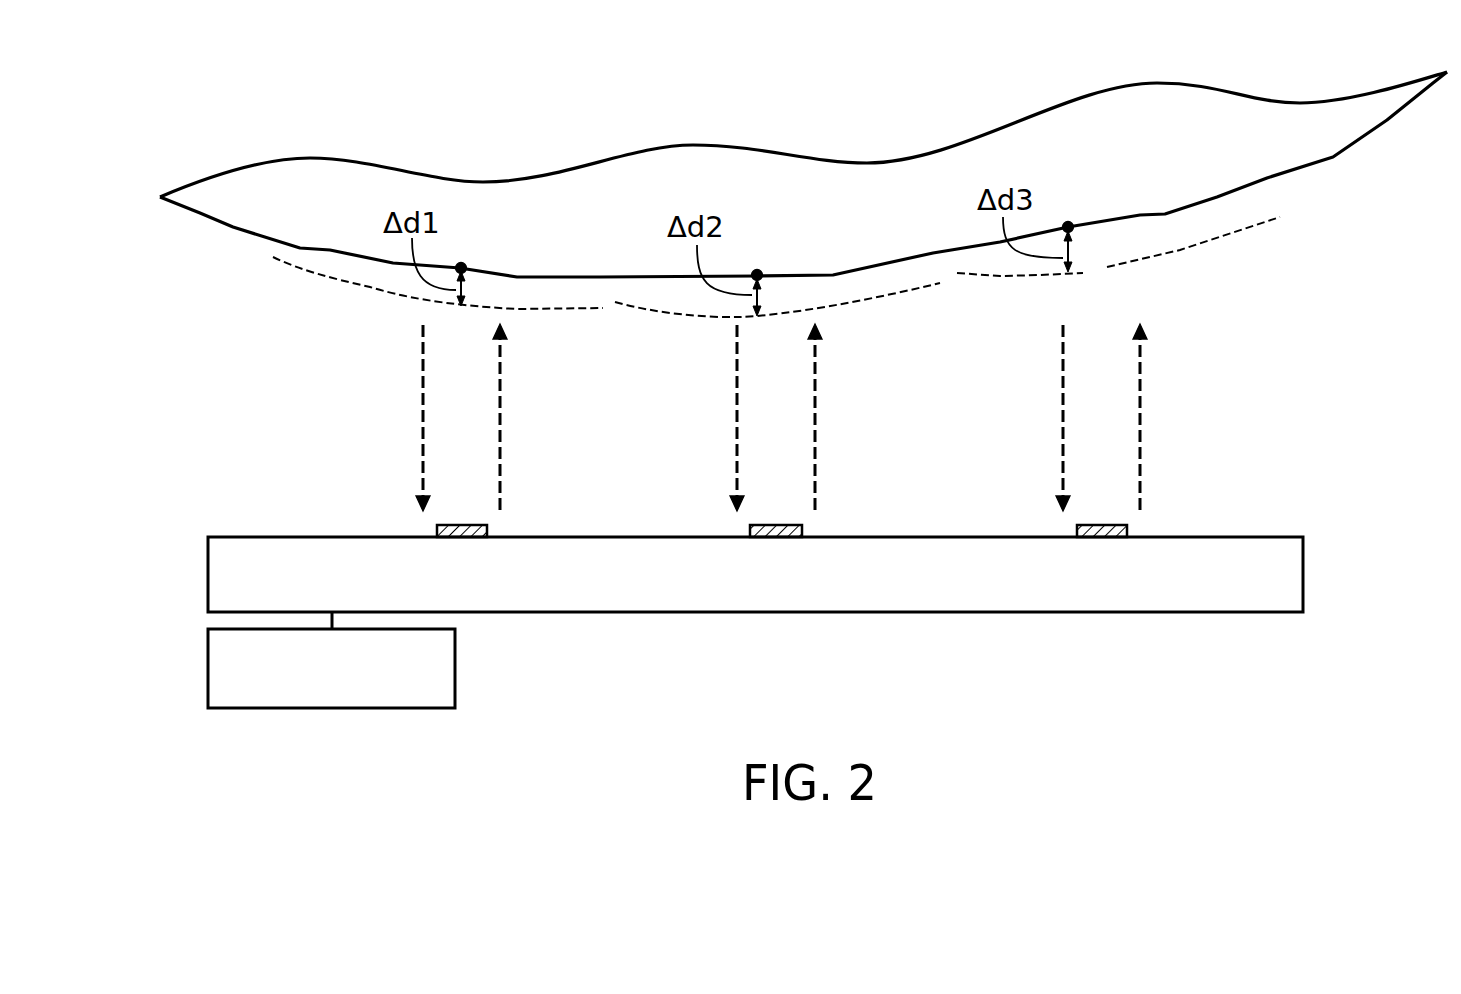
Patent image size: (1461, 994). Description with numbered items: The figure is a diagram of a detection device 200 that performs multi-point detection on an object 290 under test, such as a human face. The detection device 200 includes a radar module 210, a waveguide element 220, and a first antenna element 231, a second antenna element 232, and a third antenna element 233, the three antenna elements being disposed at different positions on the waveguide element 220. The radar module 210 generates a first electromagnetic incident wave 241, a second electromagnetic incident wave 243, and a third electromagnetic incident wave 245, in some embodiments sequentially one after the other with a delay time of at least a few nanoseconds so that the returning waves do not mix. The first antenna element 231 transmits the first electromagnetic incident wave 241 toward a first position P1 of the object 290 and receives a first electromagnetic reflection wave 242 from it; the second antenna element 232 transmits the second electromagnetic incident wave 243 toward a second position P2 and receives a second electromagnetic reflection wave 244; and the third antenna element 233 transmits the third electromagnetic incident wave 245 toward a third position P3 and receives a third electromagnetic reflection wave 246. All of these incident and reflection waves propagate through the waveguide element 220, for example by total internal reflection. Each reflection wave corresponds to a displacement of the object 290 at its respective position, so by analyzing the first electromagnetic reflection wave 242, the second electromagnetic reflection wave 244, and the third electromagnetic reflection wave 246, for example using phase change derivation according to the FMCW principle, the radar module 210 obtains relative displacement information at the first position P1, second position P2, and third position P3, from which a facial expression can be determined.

The detection device 200 is at (234, 511).
The radar module 210 is at (208, 669).
The waveguide element 220 is at (1292, 573).
The first antenna element 231 is at (460, 524).
The second antenna element 232 is at (773, 524).
The third antenna element 233 is at (1099, 524).
The first electromagnetic incident wave 241 is at (500, 418).
The first electromagnetic reflection wave 242 is at (423, 418).
The second electromagnetic incident wave 243 is at (815, 418).
The second electromagnetic reflection wave 244 is at (737, 418).
The third electromagnetic incident wave 245 is at (1140, 418).
The third electromagnetic reflection wave 246 is at (1063, 418).
The object under test 290 is at (1335, 137).
The first position P1 is at (462, 265).
The second position P2 is at (758, 271).
The third position P3 is at (1069, 223).